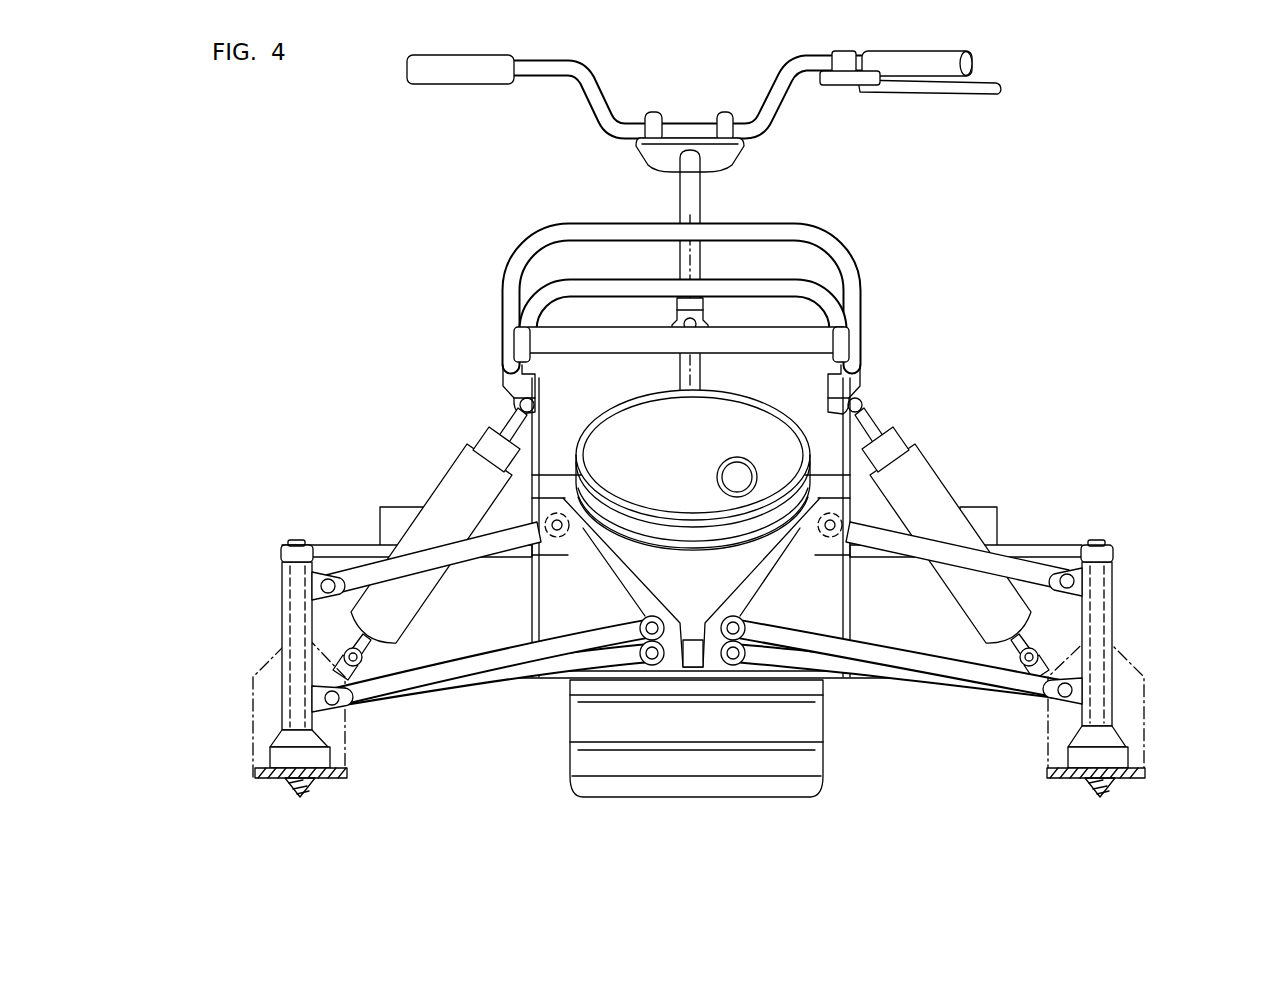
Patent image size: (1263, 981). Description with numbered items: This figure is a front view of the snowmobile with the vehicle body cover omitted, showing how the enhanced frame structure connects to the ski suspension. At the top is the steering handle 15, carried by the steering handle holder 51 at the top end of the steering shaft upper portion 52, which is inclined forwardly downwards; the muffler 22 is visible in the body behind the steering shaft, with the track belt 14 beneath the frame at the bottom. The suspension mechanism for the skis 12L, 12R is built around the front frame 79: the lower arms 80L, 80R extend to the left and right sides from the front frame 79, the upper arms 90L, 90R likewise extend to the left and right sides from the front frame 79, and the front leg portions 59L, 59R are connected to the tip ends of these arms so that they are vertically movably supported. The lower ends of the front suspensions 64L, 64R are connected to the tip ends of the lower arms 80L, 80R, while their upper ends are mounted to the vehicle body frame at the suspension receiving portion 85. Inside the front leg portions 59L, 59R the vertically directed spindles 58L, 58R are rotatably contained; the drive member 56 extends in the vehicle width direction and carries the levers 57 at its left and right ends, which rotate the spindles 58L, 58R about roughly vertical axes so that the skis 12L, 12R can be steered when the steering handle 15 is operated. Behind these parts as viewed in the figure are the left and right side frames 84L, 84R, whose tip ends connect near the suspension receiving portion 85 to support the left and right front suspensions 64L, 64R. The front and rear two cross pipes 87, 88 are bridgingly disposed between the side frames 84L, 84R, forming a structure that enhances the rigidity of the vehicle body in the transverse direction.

The steering handle 15 is at (600, 100).
The steering handle holder 51 is at (650, 157).
The steering shaft upper portion 52 is at (683, 187).
The cross pipe 88 is at (530, 236).
The cross pipe 87 is at (776, 286).
The side frame 84R is at (503, 348).
The side frame 84L is at (867, 335).
The suspension receiving portion 85 is at (875, 380).
The front frame 79 is at (672, 580).
The muffler 22 is at (643, 447).
The drive member 56 is at (340, 550).
The lever 57 is at (283, 553).
The spindle 58R is at (284, 600).
The spindle 58L is at (1114, 590).
The front leg portion 59R is at (262, 682).
The front leg portion 59L is at (1133, 660).
The ski 12R is at (256, 771).
The ski 12L is at (1148, 766).
The front suspension 64R is at (465, 495).
The front suspension 64L is at (915, 478).
The upper arm 90R is at (422, 567).
The upper arm 90L is at (940, 535).
The lower arm 80R is at (440, 680).
The lower arm 80L is at (940, 665).
The track belt 14 is at (805, 722).